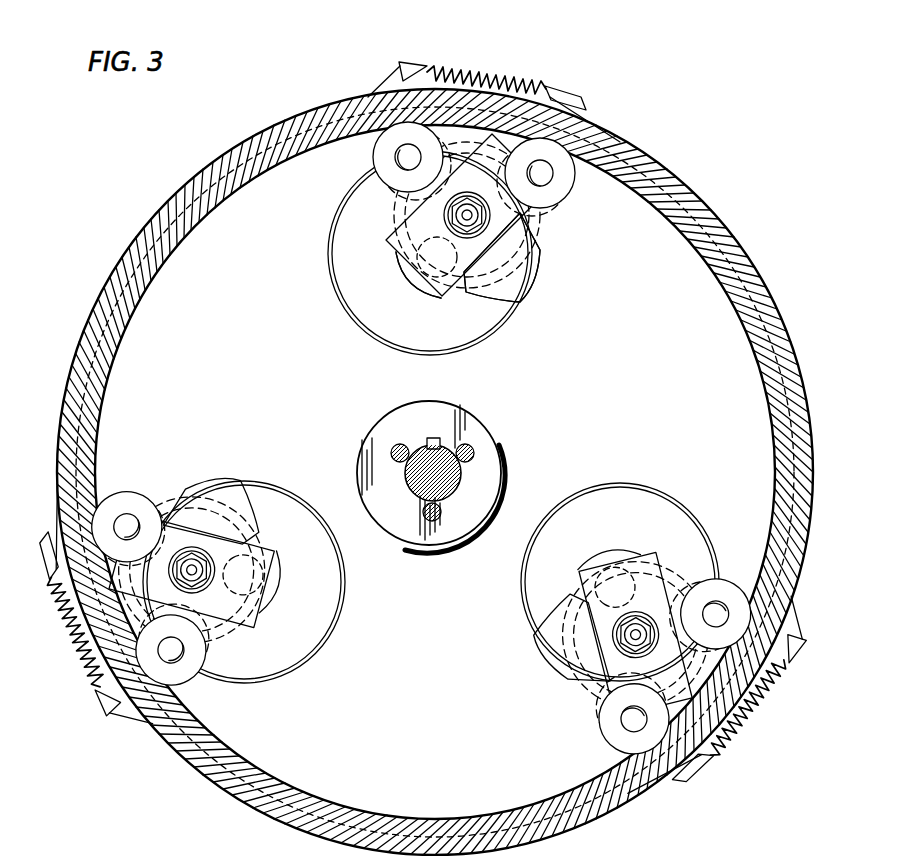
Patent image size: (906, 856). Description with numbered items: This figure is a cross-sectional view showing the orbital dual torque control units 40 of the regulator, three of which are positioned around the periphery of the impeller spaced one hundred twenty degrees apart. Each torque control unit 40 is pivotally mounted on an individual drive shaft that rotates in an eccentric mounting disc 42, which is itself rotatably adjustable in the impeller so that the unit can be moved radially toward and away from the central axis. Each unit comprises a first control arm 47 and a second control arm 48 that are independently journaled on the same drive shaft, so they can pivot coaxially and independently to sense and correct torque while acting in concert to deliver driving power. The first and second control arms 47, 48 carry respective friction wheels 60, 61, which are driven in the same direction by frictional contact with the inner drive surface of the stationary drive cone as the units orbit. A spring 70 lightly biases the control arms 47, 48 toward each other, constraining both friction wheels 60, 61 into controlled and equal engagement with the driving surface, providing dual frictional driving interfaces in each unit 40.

The dual torque control unit 40 is at (566, 236).
The eccentric mounting disc 42 is at (455, 342).
The first control arm 47 is at (395, 267).
The second control arm 48 is at (497, 288).
The friction wheel 60 is at (126, 497).
The friction wheel 61 is at (392, 165).
The spring 70 is at (500, 78).